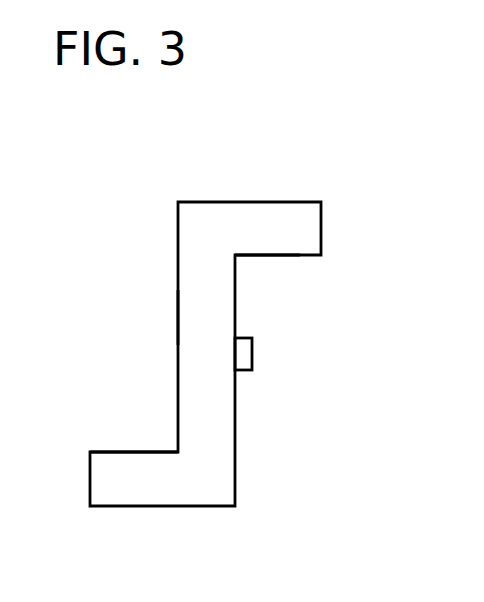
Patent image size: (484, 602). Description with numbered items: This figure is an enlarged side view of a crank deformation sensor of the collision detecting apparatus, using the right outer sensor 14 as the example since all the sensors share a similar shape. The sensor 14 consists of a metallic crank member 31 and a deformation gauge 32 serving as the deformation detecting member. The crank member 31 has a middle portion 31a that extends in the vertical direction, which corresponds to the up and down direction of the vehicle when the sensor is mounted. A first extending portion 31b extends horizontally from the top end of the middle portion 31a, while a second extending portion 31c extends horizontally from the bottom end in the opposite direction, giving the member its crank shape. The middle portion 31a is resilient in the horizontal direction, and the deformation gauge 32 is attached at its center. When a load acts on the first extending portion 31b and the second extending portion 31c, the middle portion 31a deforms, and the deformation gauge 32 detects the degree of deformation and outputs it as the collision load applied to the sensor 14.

The right outer sensor 14 is at (262, 528).
The crank member 31 is at (237, 436).
The middle portion 31a is at (188, 315).
The first extending portion 31b is at (255, 249).
The second extending portion 31c is at (155, 467).
The deformation gauge 32 is at (252, 354).